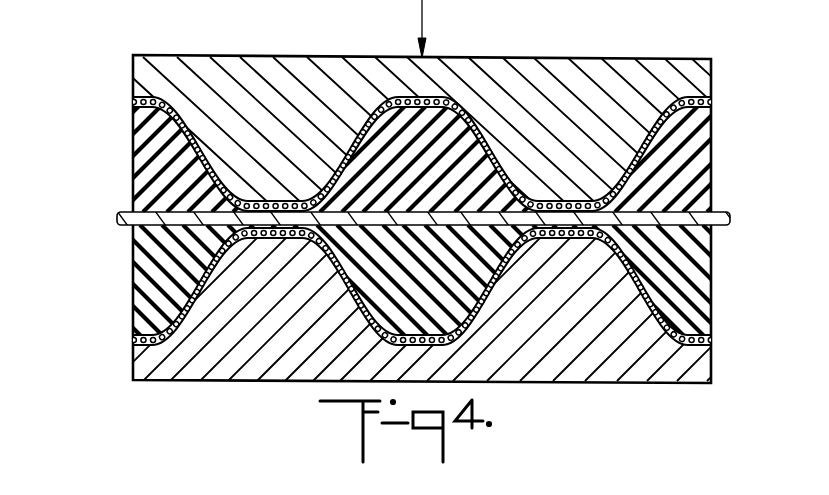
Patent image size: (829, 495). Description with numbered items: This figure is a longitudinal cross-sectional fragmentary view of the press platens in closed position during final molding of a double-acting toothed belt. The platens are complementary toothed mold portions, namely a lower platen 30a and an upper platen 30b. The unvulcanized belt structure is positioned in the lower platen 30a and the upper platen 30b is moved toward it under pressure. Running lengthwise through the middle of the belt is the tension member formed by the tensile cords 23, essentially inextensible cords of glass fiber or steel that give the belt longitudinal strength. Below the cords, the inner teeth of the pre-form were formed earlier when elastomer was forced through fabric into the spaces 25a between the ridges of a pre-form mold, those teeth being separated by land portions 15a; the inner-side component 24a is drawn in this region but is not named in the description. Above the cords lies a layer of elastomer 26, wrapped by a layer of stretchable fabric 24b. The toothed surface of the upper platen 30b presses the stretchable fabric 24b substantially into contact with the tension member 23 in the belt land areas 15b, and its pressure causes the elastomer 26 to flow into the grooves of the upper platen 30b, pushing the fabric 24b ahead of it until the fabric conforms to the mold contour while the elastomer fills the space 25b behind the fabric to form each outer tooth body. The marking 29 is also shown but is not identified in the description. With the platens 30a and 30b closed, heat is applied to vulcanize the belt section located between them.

The land portions 15a is at (556, 240).
The belt land areas 15b is at (271, 206).
The tensile cords 23 is at (117, 222).
The lower bead chain 24a is at (467, 334).
The layer of stretchable fabric 24b is at (135, 100).
The spaces between adjacent ridges 25a is at (385, 290).
The space behind the fabric 25b is at (403, 150).
The layer of elastomer 26 is at (147, 145).
The direction arrow 29 is at (121, 277).
The lower platen 30a is at (147, 362).
The upper platen 30b is at (602, 72).